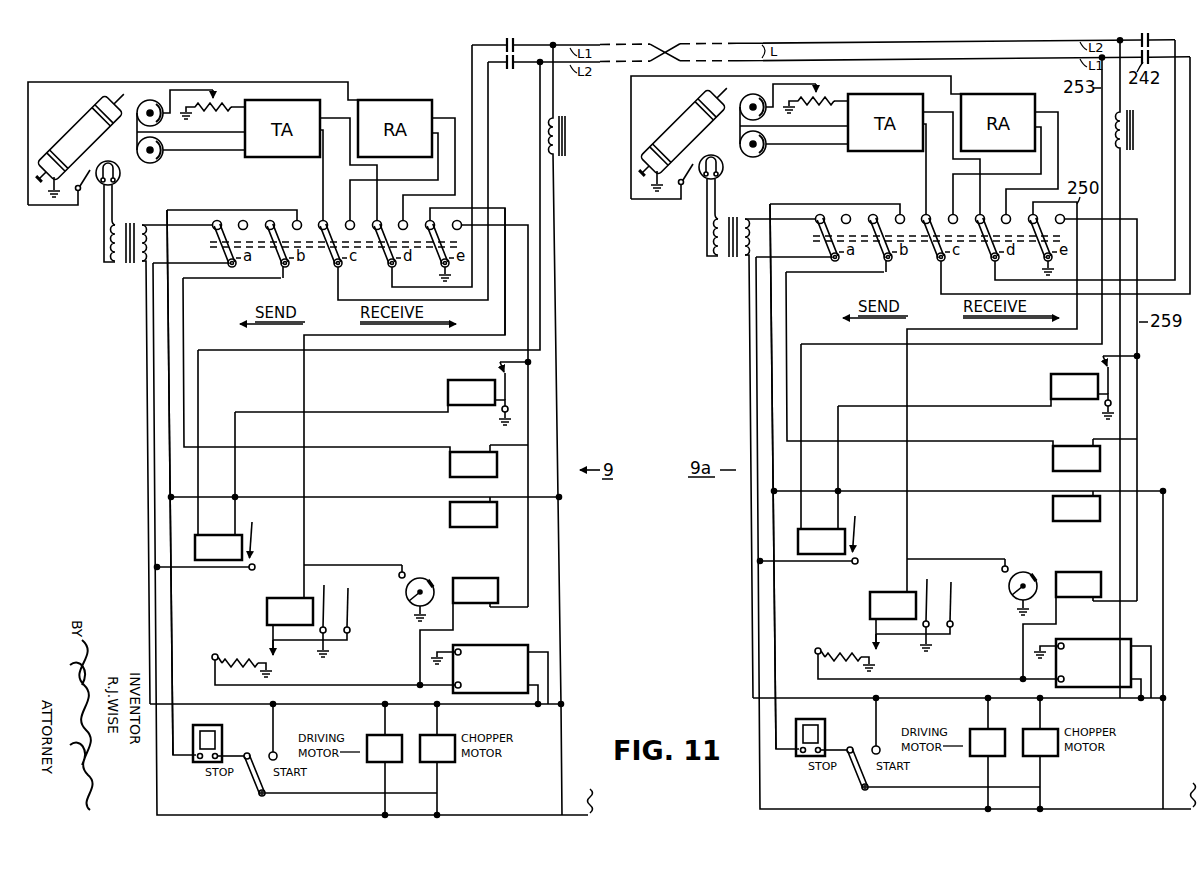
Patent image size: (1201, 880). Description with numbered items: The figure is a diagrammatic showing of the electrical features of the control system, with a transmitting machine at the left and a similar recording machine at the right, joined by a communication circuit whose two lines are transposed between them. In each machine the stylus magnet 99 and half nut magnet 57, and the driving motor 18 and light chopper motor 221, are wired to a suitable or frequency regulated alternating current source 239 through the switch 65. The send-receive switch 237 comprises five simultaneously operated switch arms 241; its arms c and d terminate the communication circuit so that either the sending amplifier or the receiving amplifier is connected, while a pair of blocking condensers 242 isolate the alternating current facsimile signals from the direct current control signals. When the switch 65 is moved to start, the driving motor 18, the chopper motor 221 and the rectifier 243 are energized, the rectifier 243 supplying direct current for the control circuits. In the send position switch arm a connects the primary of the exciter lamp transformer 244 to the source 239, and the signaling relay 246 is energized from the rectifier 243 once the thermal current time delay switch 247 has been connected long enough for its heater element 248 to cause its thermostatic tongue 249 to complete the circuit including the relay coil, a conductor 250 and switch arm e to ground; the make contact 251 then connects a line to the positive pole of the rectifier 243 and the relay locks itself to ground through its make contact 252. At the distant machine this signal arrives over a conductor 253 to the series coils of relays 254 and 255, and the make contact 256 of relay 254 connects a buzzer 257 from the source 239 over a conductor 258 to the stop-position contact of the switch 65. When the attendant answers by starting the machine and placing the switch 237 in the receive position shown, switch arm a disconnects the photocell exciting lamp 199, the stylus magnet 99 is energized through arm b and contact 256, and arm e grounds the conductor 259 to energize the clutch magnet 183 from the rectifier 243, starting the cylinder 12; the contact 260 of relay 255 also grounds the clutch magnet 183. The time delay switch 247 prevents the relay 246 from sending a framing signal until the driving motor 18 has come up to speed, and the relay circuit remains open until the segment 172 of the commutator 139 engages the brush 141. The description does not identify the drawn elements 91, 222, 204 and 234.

The cylinder 12 is at (71, 130).
The tube switch contact 91 is at (81, 187).
The jack connector 222 is at (148, 101).
The jack connector 204 is at (157, 160).
The potentiometer 234 is at (195, 110).
The photocell exciting lamp 199 is at (120, 179).
The exciter lamp transformer 244 is at (132, 264).
The switch arms 241 is at (280, 268).
The send-receive switch 237 is at (317, 264).
The conductor 250 is at (505, 207).
The blocking condensers 242 is at (509, 68).
The conductor 253 is at (540, 114).
The conductor 259 is at (507, 329).
The make contact 260 is at (498, 363).
The relay 255 is at (448, 388).
The stylus magnet 99 is at (450, 464).
The half nut magnet 57 is at (450, 514).
The clutch magnet 183 is at (473, 582).
The rectifier 243 is at (487, 648).
The signaling relay 246 is at (267, 613).
The make contact 252 is at (328, 584).
The make contact 251 is at (350, 590).
The heater element 248 is at (258, 666).
The thermal current time delay switch 247 is at (209, 655).
The thermostatic tongue 249 is at (269, 657).
The brush 141 is at (406, 577).
The segment 172 is at (409, 599).
The commutator 139 is at (430, 594).
The conductor 258 is at (175, 600).
The relay 254 is at (210, 542).
The make contact 256 is at (253, 540).
The buzzer 257 is at (215, 724).
The switch 65 is at (257, 789).
The driving motor 18 is at (388, 765).
The light chopper motor 221 is at (440, 765).
The alternating current source 239 is at (582, 789).